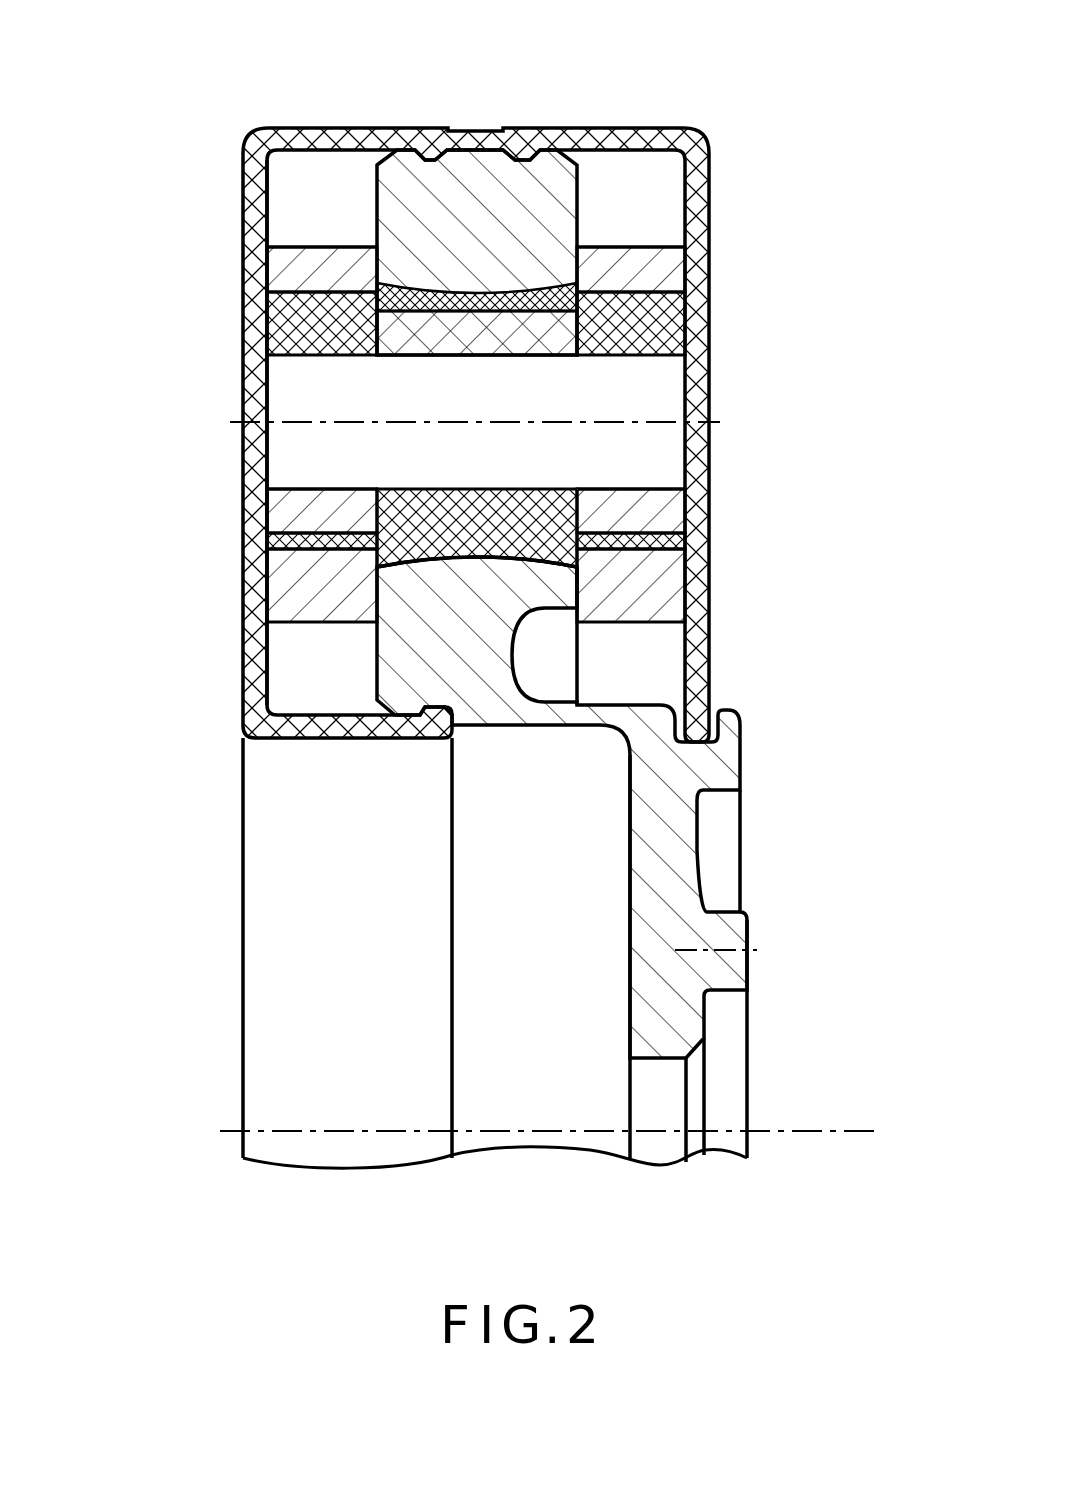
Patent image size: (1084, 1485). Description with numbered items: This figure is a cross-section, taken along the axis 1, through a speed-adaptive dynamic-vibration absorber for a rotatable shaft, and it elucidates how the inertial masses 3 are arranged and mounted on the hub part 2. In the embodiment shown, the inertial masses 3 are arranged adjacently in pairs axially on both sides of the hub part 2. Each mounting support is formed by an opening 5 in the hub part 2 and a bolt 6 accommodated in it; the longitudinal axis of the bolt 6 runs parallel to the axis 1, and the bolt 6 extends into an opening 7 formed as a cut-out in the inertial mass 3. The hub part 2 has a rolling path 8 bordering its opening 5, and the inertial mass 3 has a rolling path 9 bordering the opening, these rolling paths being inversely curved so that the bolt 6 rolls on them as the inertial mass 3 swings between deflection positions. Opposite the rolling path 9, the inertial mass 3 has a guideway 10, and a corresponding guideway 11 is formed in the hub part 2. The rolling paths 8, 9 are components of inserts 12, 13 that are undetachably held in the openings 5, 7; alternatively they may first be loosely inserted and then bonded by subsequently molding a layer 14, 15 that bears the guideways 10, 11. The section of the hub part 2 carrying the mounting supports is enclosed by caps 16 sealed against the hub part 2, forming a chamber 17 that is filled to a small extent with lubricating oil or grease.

The axis 1 is at (815, 1123).
The hub part 2 is at (683, 863).
The inertial mass 3 is at (328, 607).
The opening 5 is at (424, 284).
The bolt 6 is at (668, 470).
The opening 7 is at (327, 542).
The rolling path 8 is at (405, 358).
The rolling path 9 is at (307, 488).
The guideway 10 is at (550, 490).
The guideway 11 is at (305, 360).
The insert 12 is at (460, 330).
The insert 13 is at (283, 510).
The layer 14 is at (465, 550).
The layer 15 is at (290, 315).
The cap 16 is at (697, 195).
The chamber 17 is at (623, 187).